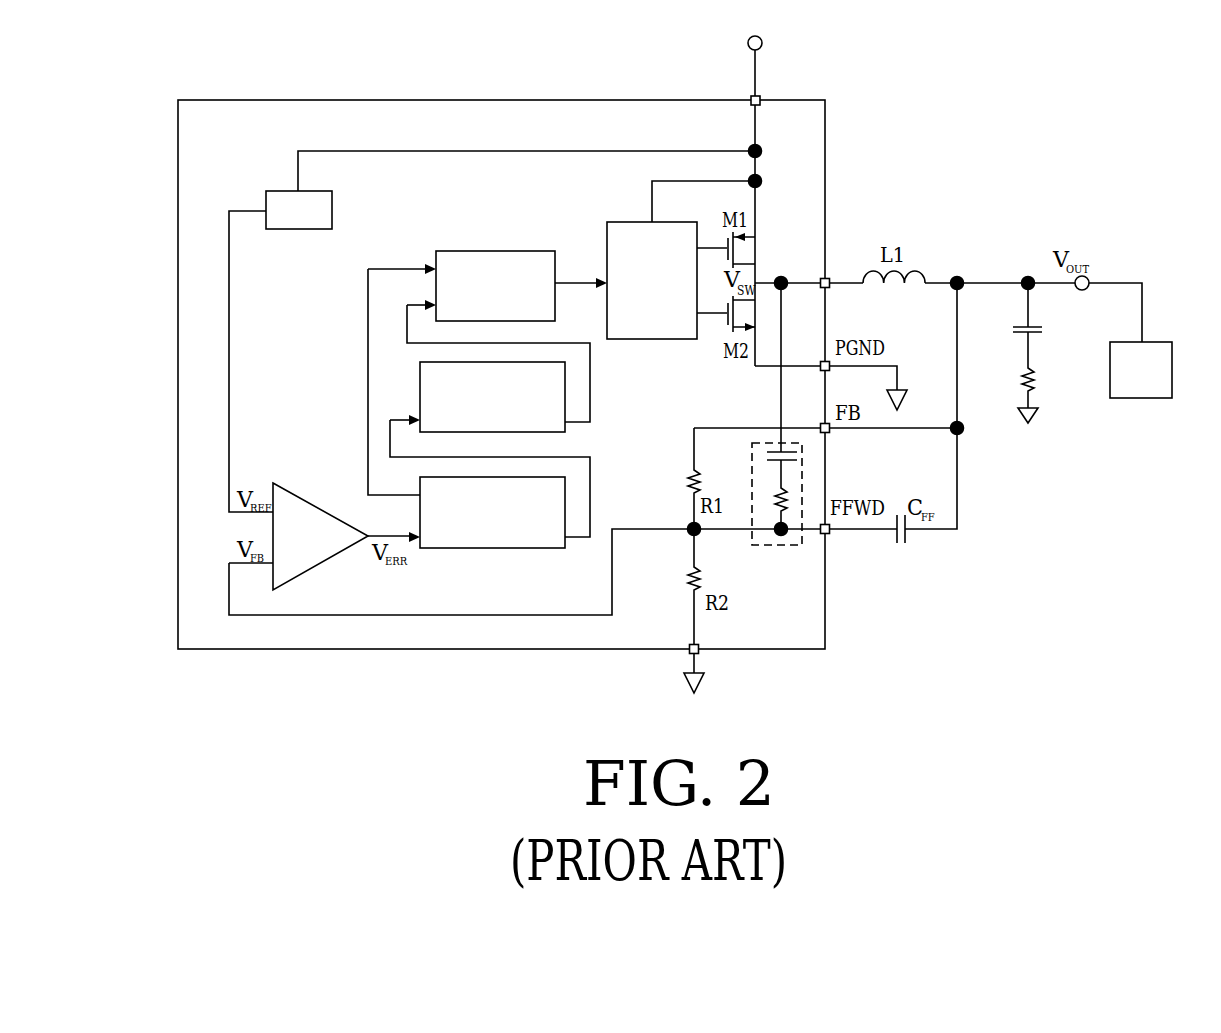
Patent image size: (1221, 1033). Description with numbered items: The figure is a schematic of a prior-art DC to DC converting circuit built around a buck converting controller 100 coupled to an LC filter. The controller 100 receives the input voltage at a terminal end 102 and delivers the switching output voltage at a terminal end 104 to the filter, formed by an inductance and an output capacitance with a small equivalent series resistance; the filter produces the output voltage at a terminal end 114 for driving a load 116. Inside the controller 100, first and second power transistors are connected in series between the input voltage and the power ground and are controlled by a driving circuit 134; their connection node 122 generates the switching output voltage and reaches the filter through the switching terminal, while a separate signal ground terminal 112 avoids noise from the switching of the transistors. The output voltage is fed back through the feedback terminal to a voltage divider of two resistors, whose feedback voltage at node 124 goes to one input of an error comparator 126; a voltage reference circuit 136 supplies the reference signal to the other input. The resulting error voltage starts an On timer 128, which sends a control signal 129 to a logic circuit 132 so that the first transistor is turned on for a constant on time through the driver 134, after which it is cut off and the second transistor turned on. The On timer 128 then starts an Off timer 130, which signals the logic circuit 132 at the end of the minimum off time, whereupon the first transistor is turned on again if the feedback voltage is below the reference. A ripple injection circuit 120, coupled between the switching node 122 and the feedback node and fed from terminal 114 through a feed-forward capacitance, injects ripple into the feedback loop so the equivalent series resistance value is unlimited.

The buck converting controller 100 is at (440, 100).
The terminal end 102 is at (761, 97).
The terminal end 104 is at (829, 289).
The signal ground pin SGND 112 is at (690, 655).
The terminal end 114 is at (985, 283).
The load 116 is at (1140, 398).
The ripple injection circuit 120 is at (766, 548).
The connection node 122 is at (786, 290).
The feedback node VFB 124 is at (690, 535).
The error comparator 126 is at (300, 497).
The On timer 128 is at (490, 550).
The control signal 129 is at (366, 333).
The Off timer 130 is at (418, 395).
The logic circuit 132 is at (490, 252).
The driving circuit 134 is at (671, 325).
The voltage reference circuit 136 is at (333, 210).